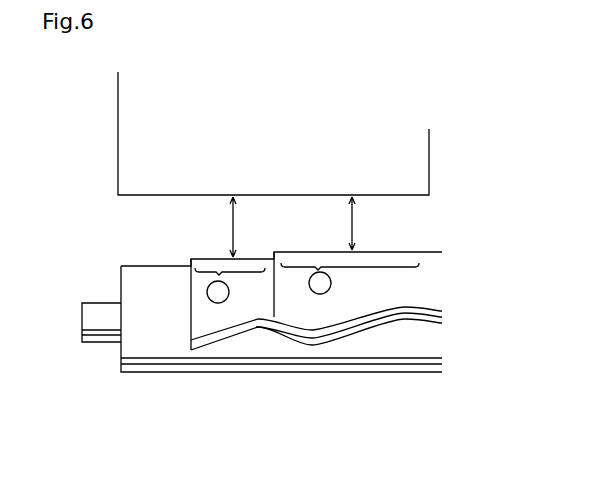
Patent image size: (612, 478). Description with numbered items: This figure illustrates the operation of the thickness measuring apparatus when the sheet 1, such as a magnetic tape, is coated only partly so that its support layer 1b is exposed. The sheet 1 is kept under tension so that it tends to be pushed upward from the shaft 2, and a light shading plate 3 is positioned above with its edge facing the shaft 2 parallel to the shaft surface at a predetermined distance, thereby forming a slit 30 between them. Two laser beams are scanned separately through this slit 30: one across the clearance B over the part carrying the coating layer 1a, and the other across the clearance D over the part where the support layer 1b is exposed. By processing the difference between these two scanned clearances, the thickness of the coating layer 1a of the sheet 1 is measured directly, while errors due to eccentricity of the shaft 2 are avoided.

The sheet 1 is at (461, 319).
The coating layer 1a is at (372, 289).
The support layer 1b is at (213, 312).
The shaft 2 is at (252, 372).
The light shading plate 3 is at (429, 165).
The slit 30 is at (451, 229).